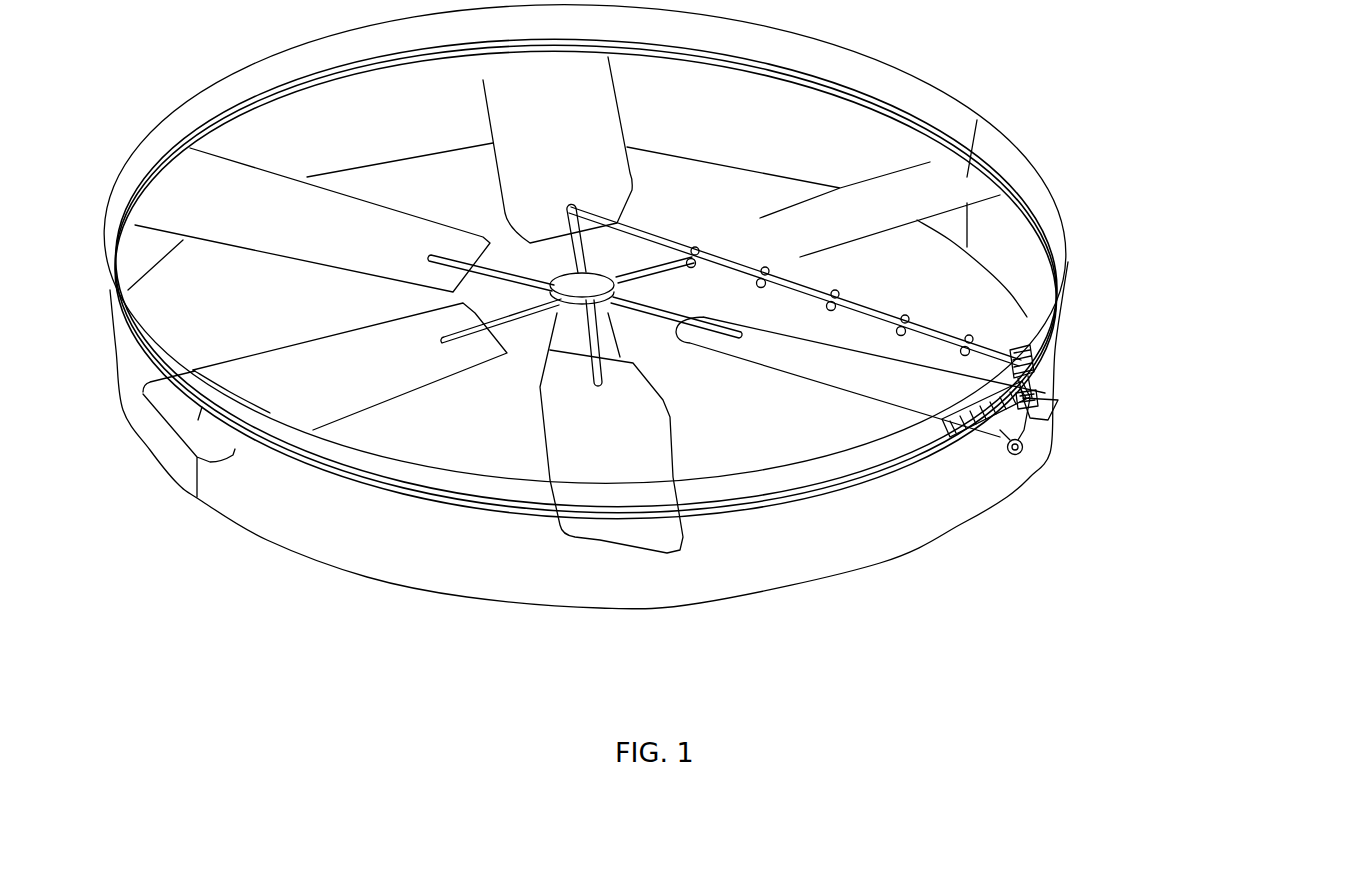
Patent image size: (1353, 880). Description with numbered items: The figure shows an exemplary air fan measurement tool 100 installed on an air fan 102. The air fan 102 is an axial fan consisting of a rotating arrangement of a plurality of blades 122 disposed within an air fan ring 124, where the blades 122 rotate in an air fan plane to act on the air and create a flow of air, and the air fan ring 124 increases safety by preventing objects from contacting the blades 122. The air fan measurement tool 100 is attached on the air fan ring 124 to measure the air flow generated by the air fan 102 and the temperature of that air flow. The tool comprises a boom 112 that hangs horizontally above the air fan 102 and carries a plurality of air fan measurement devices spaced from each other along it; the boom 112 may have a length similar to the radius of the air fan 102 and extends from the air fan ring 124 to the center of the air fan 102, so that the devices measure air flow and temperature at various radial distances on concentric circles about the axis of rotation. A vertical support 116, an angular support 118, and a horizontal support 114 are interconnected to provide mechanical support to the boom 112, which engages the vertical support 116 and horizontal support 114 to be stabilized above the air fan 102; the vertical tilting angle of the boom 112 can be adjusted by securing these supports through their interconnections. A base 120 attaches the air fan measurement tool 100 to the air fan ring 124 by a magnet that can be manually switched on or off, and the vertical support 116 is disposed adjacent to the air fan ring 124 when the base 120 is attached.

The air fan measurement tool 100 is at (936, 347).
The air fan 102 is at (624, 316).
The boom 112 is at (868, 307).
The horizontal support 114 is at (1020, 363).
The vertical support 116 is at (1023, 398).
The angular support 118 is at (1003, 419).
The base 120 is at (1023, 448).
The blades 122 is at (793, 350).
The air fan ring 124 is at (753, 537).